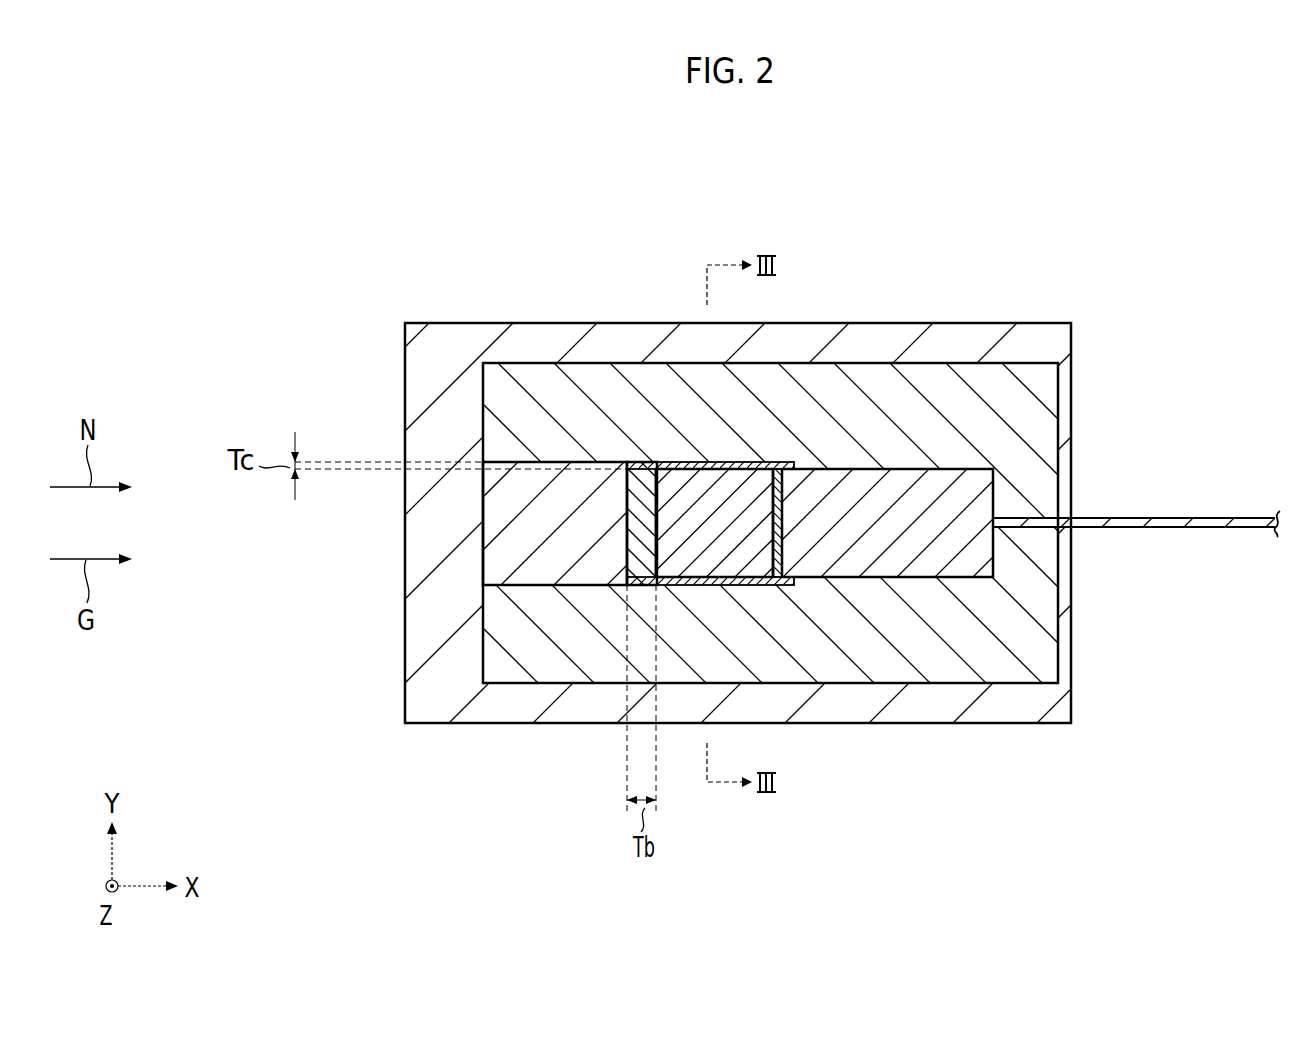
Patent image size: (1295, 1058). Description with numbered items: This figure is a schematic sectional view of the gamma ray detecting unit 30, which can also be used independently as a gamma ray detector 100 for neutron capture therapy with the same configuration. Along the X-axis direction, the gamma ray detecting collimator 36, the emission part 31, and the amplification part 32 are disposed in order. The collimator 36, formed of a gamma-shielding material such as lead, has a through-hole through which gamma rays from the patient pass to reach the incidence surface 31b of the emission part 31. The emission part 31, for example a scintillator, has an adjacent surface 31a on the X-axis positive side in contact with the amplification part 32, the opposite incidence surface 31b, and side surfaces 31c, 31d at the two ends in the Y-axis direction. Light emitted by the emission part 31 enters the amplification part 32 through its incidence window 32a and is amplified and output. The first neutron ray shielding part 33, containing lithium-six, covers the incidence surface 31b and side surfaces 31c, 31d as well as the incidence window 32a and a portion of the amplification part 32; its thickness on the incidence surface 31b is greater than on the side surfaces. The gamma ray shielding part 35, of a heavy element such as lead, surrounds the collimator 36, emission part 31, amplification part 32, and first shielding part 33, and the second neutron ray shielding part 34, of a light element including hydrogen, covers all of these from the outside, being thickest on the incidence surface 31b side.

The gamma ray detecting unit 30 is at (1140, 216).
The gamma ray detector for neutron capture therapy 100 is at (662, 468).
The emission part 31 is at (753, 477).
The adjacent surface 31a is at (778, 546).
The incidence surface 31b is at (653, 531).
The side surface 31c is at (694, 466).
The side surface 31d is at (743, 580).
The amplification part 32 is at (942, 493).
The incidence window 32a is at (783, 496).
The first neutron ray shielding part 33 is at (635, 548).
The second neutron ray shielding part 34 is at (428, 702).
The gamma ray shielding part 35 is at (935, 662).
The gamma ray detecting collimator 36 is at (503, 557).